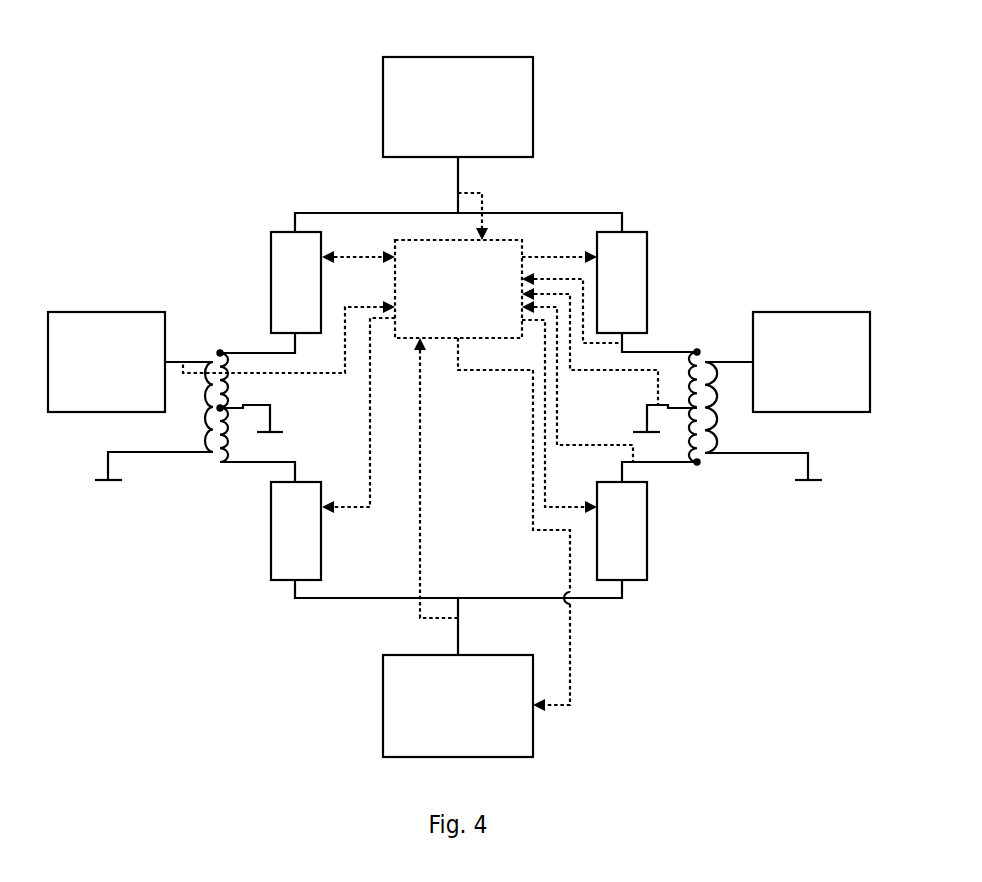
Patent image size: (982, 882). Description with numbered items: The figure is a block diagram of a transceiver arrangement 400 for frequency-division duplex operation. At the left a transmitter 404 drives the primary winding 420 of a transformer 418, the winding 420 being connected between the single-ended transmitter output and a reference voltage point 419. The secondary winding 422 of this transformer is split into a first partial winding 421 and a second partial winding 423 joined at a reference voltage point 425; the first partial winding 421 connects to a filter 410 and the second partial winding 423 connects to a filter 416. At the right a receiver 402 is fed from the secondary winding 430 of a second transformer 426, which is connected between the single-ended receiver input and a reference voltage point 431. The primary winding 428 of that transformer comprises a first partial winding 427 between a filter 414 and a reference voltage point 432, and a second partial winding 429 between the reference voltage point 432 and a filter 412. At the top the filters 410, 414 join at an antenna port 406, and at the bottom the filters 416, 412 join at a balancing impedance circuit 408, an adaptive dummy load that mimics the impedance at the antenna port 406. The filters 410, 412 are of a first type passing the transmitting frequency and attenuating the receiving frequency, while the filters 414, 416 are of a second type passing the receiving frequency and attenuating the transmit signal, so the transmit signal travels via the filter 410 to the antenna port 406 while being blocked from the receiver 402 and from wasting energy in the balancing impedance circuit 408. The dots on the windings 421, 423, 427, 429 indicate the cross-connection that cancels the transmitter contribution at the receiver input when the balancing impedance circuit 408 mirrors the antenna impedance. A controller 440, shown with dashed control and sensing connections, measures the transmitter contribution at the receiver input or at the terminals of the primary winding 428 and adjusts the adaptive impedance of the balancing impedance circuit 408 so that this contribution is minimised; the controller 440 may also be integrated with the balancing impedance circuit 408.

The transceiver arrangement 400 is at (476, 413).
The receiver 402 is at (805, 314).
The transmitter 404 is at (112, 314).
The antenna port 406 is at (398, 78).
The balancing impedance circuit 408 is at (448, 750).
The filter 410 is at (285, 257).
The filter 412 is at (630, 555).
The filter 414 is at (633, 257).
The filter 416 is at (285, 555).
The transformer 418 is at (205, 405).
The reference voltage point 419 is at (110, 483).
The primary winding 420 is at (212, 440).
The first partial winding 421 is at (222, 353).
The secondary winding 422 is at (213, 452).
The second partial winding 423 is at (228, 462).
The reference voltage point 425 is at (272, 424).
The transformer 426 is at (711, 405).
The first partial winding 427 is at (697, 355).
The primary winding 428 is at (698, 462).
The second partial winding 429 is at (695, 455).
The secondary winding 430 is at (708, 440).
The reference voltage point 431 is at (800, 483).
The reference voltage point 432 is at (647, 424).
The controller 440 is at (412, 262).